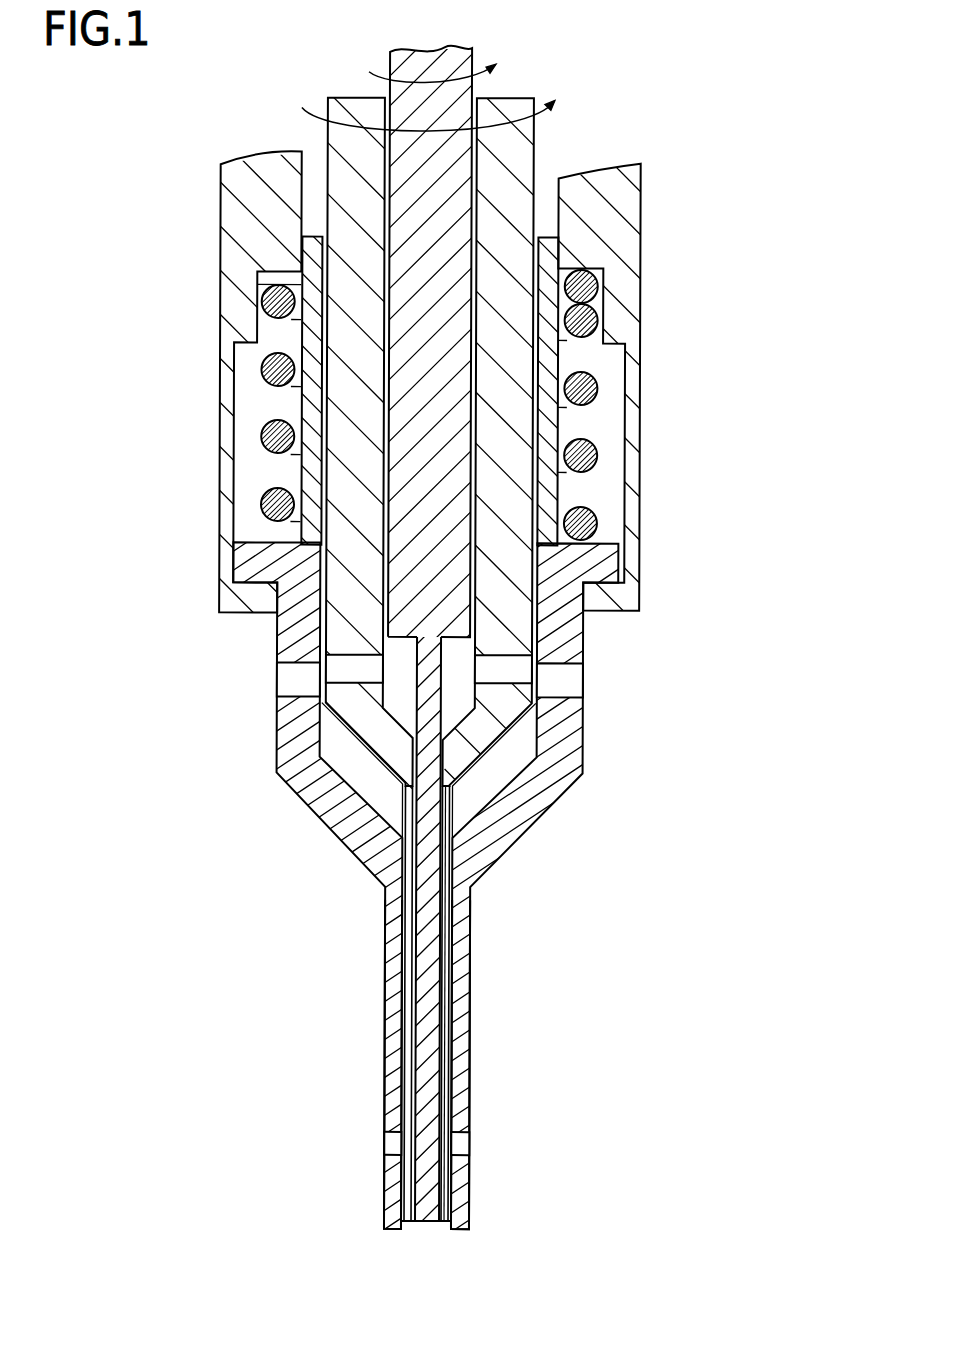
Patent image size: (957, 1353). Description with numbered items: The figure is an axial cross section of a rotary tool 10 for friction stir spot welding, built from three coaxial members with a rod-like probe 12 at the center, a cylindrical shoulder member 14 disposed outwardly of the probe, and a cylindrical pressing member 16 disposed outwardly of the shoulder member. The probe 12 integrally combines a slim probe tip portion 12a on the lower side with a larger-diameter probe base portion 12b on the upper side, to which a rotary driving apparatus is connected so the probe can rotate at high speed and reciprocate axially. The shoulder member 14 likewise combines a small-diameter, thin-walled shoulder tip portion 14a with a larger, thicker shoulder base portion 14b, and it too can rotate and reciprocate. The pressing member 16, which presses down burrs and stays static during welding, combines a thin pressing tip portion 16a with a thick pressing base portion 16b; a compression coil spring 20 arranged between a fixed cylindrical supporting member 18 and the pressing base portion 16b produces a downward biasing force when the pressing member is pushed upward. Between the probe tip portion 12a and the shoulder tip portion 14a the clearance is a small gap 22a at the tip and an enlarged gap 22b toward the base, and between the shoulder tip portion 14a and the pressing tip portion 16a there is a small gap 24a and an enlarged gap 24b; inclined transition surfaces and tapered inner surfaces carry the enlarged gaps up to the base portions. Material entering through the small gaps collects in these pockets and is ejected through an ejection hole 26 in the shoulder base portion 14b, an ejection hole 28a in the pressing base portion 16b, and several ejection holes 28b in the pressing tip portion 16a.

The rotary tool 10 is at (249, 824).
The probe 12 is at (476, 575).
The probe tip portion 12a is at (431, 932).
The probe base portion 12b is at (445, 182).
The shoulder member 14 is at (458, 803).
The shoulder tip portion 14a is at (443, 1078).
The shoulder base portion 14b is at (510, 358).
The pressing member 16 is at (474, 1003).
The pressing tip portion 16a is at (463, 1100).
The pressing base portion 16b is at (580, 742).
The cylindrical supporting member 18 is at (258, 205).
The compression coil spring 20 is at (275, 440).
The small gap 22a is at (411, 1228).
The enlarged gap 22b is at (418, 1045).
The small gap 24a is at (442, 1228).
The enlarged gap 24b is at (407, 960).
The ejection hole 26 is at (355, 679).
The ejection hole 28a is at (298, 692).
The ejection holes 28b is at (394, 1153).